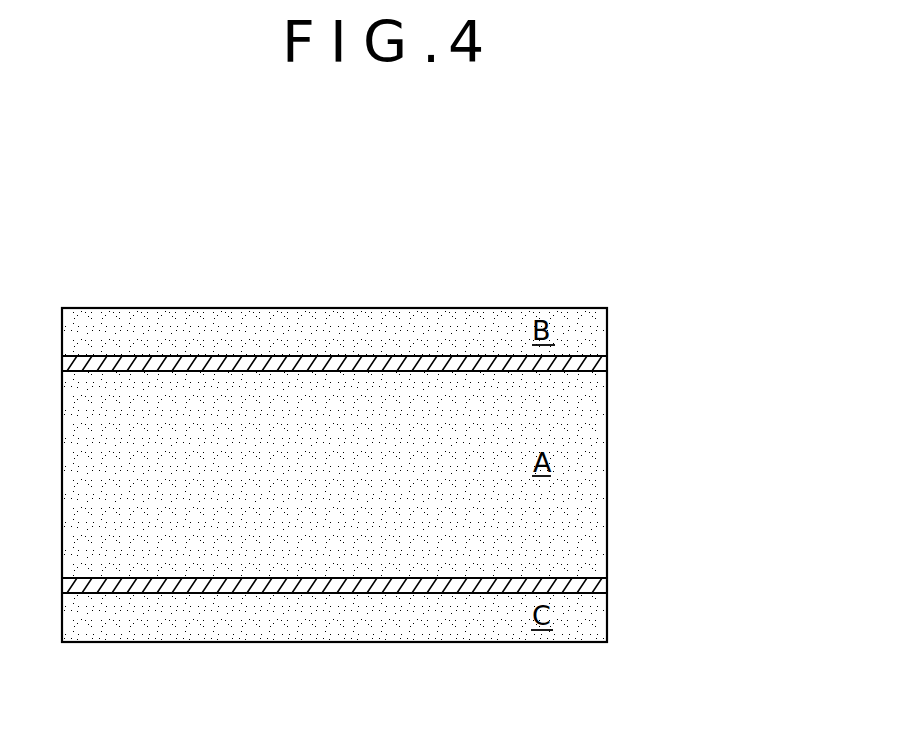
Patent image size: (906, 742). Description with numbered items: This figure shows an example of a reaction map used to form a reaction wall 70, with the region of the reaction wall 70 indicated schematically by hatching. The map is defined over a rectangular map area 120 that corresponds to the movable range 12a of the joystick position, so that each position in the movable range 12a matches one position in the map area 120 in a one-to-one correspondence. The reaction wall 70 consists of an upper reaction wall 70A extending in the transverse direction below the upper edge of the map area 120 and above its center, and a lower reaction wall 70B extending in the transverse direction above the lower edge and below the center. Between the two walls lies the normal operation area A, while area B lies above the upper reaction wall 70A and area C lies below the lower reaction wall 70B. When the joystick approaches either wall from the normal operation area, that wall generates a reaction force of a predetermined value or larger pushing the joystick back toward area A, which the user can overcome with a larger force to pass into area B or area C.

The map area 120 is at (335, 455).
The movable range 12a is at (447, 308).
The reaction wall 70 is at (415, 477).
The upper reaction wall 70A is at (600, 366).
The lower reaction wall 70B is at (377, 588).